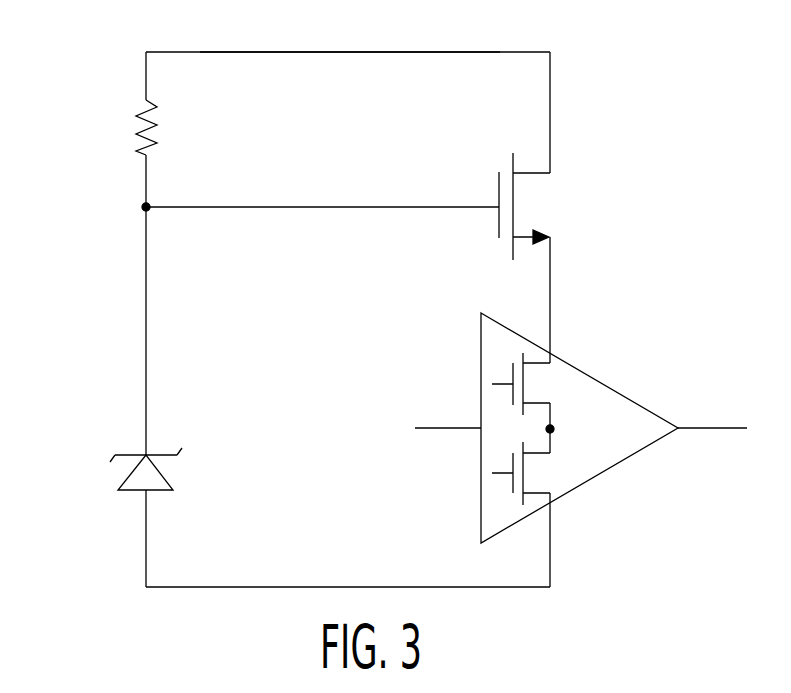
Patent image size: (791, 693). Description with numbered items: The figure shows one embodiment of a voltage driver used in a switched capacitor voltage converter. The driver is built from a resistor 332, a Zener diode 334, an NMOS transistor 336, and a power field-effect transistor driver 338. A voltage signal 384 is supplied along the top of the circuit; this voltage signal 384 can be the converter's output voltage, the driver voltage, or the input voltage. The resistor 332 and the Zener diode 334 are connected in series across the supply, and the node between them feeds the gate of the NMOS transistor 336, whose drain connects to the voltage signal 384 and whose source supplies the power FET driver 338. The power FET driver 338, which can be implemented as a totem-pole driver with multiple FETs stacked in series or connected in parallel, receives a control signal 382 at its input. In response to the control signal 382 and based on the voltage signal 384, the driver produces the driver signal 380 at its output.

The resistor 332 is at (135, 133).
The Zener diode 334 is at (118, 490).
The NMOS transistor 336 is at (497, 183).
The power field-effect transistor (FET) driver 338 is at (481, 543).
The driver signal 380 is at (715, 428).
The control signal 382 is at (440, 428).
The voltage signal 384 is at (463, 29).